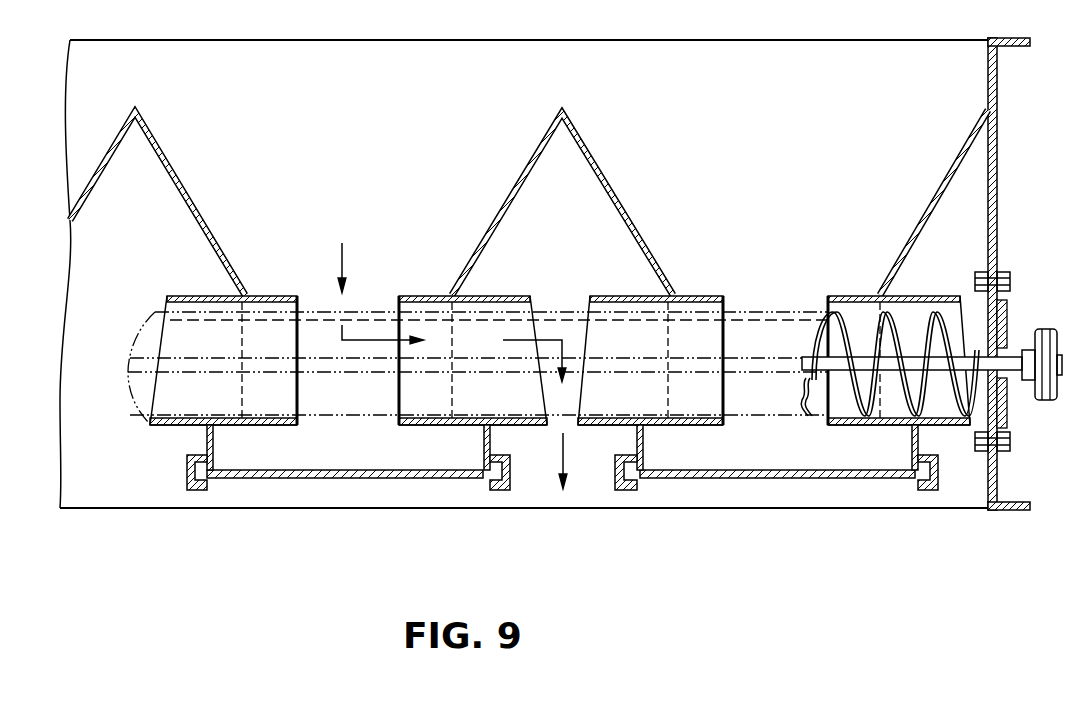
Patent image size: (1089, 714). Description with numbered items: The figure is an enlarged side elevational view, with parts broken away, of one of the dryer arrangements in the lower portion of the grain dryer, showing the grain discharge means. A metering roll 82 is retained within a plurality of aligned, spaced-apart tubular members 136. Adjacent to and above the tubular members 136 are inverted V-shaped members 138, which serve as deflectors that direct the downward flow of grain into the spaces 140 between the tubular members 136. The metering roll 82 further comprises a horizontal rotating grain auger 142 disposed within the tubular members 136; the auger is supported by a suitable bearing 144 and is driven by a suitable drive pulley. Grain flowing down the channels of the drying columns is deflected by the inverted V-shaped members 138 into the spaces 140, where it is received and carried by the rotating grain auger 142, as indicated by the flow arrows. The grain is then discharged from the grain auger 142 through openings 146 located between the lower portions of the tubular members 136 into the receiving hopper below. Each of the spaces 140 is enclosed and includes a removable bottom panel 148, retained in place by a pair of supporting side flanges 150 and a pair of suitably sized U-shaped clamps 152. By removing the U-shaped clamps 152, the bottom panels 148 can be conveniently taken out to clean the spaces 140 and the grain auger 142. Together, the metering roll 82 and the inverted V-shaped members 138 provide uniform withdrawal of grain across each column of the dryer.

The metering roll 82 is at (757, 282).
The tubular members 136 is at (266, 296).
The inverted V-shaped members 138 is at (192, 203).
The spaces 140 is at (316, 310).
The grain auger 142 is at (822, 313).
The bearing 144 is at (1005, 346).
The openings 146 is at (143, 426).
The bottom panel 148 is at (306, 480).
The supporting side flanges 150 is at (207, 447).
The U-shaped clamps 152 is at (187, 470).